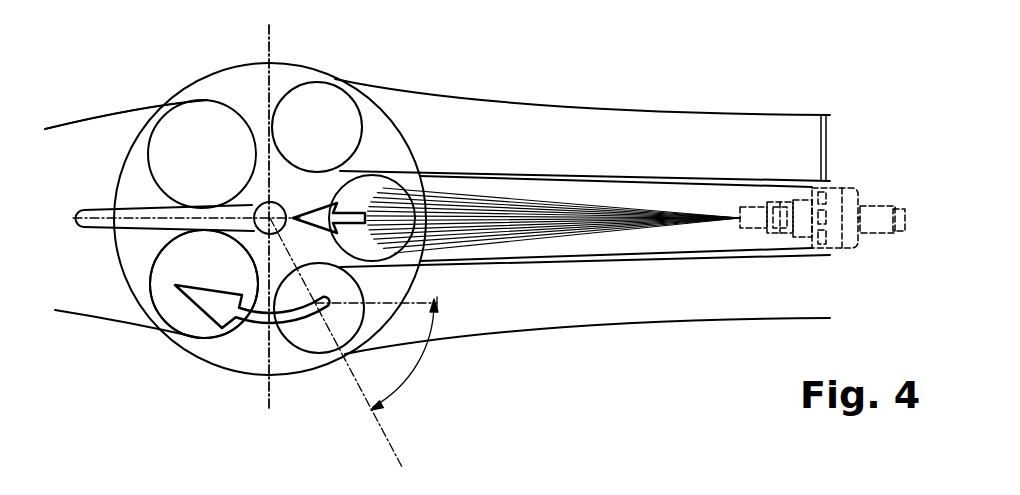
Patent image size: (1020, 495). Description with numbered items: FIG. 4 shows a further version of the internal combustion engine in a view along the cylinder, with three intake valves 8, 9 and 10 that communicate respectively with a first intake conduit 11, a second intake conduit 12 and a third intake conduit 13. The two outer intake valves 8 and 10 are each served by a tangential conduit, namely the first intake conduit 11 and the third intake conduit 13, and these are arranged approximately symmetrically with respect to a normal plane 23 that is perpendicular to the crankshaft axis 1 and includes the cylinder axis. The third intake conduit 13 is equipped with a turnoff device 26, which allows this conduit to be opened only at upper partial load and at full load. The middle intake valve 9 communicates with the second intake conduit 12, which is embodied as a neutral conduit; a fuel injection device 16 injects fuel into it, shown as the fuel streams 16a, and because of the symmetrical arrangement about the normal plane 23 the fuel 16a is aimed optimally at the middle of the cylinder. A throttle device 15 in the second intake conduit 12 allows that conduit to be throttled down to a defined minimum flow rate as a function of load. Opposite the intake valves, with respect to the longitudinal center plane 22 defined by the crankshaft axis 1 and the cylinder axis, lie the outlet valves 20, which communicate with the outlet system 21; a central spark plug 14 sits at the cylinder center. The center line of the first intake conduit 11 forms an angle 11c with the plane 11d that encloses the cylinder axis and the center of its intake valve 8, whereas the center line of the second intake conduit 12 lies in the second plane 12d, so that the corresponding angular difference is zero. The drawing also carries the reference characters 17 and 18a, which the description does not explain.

The crankshaft axis 1 is at (268, 50).
The outlet system 21 is at (68, 127).
The outlet valves 20 is at (202, 112).
The intake valve 10 is at (323, 98).
The second plane 12d is at (238, 219).
The intake valve 8 is at (335, 308).
The intake valve 9 is at (372, 250).
The central spark plug 14 is at (276, 223).
The normal plane 23 is at (100, 220).
The insertion direction arrow 18a is at (323, 210).
The rotation direction arrow 17 is at (260, 323).
The longitudinal center plane 22 is at (270, 387).
The fuel streams 16a is at (518, 202).
The third intake conduit 13 is at (684, 162).
The first intake conduit 11 is at (689, 304).
The turnoff device 26 is at (827, 158).
The second intake conduit 12 is at (729, 214).
The throttle device 15 is at (825, 245).
The fuel injection device 16 is at (860, 215).
The angle 11c is at (418, 370).
The plane 11d is at (390, 442).